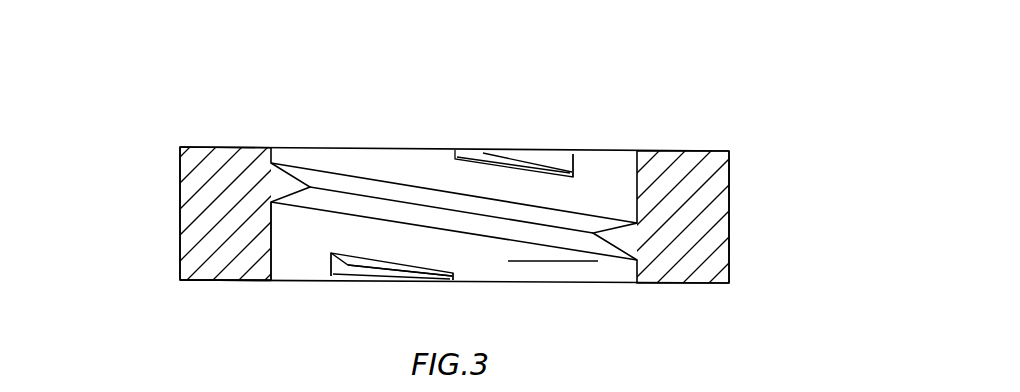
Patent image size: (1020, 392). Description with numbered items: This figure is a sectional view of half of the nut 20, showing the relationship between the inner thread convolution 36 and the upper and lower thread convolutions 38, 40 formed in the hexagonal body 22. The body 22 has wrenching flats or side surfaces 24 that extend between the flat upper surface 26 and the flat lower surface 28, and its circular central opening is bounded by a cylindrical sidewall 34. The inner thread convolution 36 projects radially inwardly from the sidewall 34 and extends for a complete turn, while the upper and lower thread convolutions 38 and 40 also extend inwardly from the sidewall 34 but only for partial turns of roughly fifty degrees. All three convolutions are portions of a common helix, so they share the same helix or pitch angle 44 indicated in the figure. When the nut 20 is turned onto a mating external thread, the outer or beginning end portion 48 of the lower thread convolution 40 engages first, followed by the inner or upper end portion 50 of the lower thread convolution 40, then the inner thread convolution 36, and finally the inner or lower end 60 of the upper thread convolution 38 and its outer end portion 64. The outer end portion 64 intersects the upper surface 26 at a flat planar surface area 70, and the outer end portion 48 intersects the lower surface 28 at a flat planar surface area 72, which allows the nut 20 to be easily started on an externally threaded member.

The nut 20 is at (681, 107).
The hexagonal body 22 is at (712, 175).
The wrenching flats or side surfaces 24 is at (180, 207).
The upper surface 26 is at (233, 147).
The lower surface 28 is at (223, 280).
The cylindrical sidewall 34 is at (273, 263).
The inner thread convolution 36 is at (398, 176).
The upper thread convolution 38 is at (522, 122).
The lower thread convolution 40 is at (375, 292).
The helix angle or pitch angle 44 is at (512, 244).
The outer or beginning end portion of the lower thread convolution 48 is at (448, 281).
The inner or upper end portion of the lower thread convolution 50 is at (338, 252).
The inner or lower end of the upper thread convolution 60 is at (578, 160).
The outer end portion of the upper thread convolution 64 is at (457, 153).
The flat planar surface area 70 is at (490, 148).
The flat planar surface area 72 is at (412, 281).